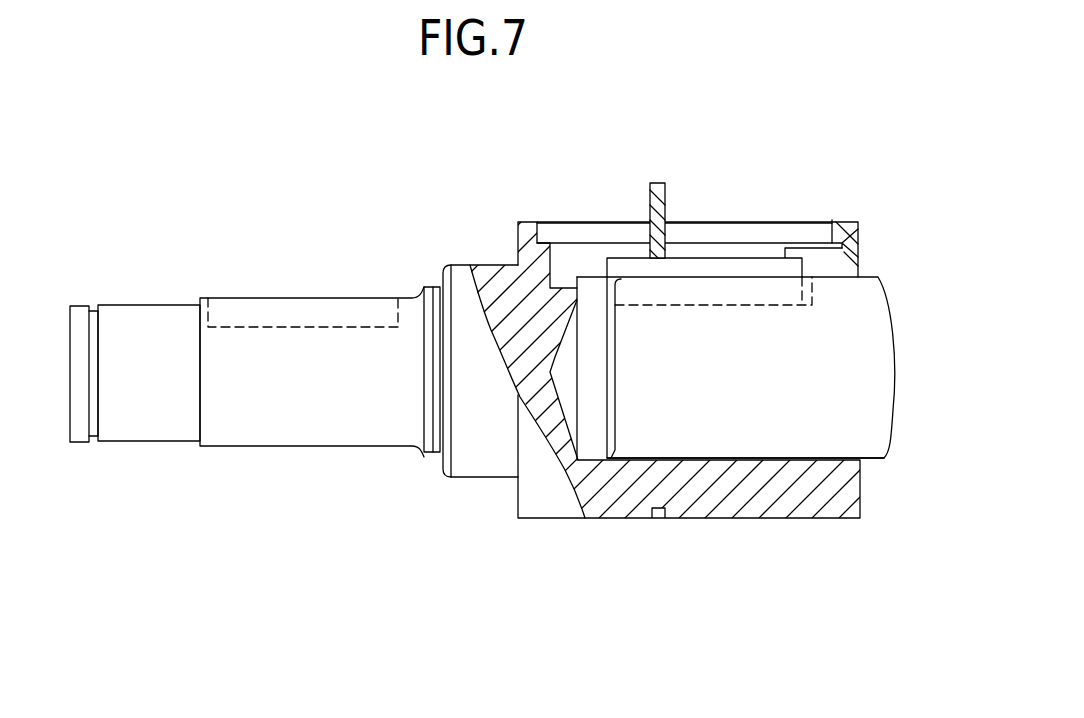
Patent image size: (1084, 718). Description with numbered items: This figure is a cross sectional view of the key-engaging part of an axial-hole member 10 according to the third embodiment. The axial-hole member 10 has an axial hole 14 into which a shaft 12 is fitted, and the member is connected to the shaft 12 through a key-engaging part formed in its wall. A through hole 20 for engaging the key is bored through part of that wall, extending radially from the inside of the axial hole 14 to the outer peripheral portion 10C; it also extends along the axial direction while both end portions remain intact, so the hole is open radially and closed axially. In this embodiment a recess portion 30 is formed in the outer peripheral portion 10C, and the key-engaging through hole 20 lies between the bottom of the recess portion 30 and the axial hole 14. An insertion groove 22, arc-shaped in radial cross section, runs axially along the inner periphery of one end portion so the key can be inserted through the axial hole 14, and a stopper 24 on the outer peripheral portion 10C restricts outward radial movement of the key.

The axial-hole member 10 is at (797, 520).
The outer peripheral portion 10C is at (521, 221).
The shaft 12 is at (868, 459).
The axial hole 14 is at (661, 458).
The through hole 20 is at (551, 262).
The insertion groove 22 is at (859, 254).
The stopper 24 is at (667, 198).
The recess portion 30 is at (543, 226).